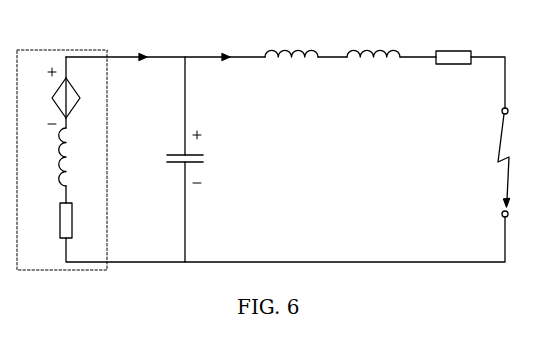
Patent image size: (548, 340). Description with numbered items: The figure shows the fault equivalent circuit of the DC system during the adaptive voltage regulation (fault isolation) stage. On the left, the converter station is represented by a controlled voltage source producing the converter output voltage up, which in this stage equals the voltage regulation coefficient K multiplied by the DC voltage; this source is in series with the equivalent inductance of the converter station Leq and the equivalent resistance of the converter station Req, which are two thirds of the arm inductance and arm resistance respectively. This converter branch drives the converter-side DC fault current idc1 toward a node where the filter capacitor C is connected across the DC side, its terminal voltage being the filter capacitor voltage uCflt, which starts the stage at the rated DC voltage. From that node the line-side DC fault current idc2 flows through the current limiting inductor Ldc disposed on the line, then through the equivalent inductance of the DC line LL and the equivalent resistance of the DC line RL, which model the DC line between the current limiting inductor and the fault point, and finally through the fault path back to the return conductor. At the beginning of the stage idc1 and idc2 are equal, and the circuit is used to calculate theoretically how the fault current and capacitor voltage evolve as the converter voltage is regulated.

The converter-side DC fault current idc1 is at (141, 44).
The line-side DC fault current idc2 is at (225, 44).
The converter output voltage up is at (51, 96).
The equivalent inductance of the converter station Leq is at (45, 157).
The equivalent resistance of the converter station Req is at (47, 221).
The filter capacitor C is at (174, 161).
The filter capacitor voltage uCflt is at (216, 157).
The current limiting inductor Ldc is at (291, 41).
The equivalent inductance of the DC line LL is at (373, 41).
The equivalent resistance of the DC line RL is at (453, 44).